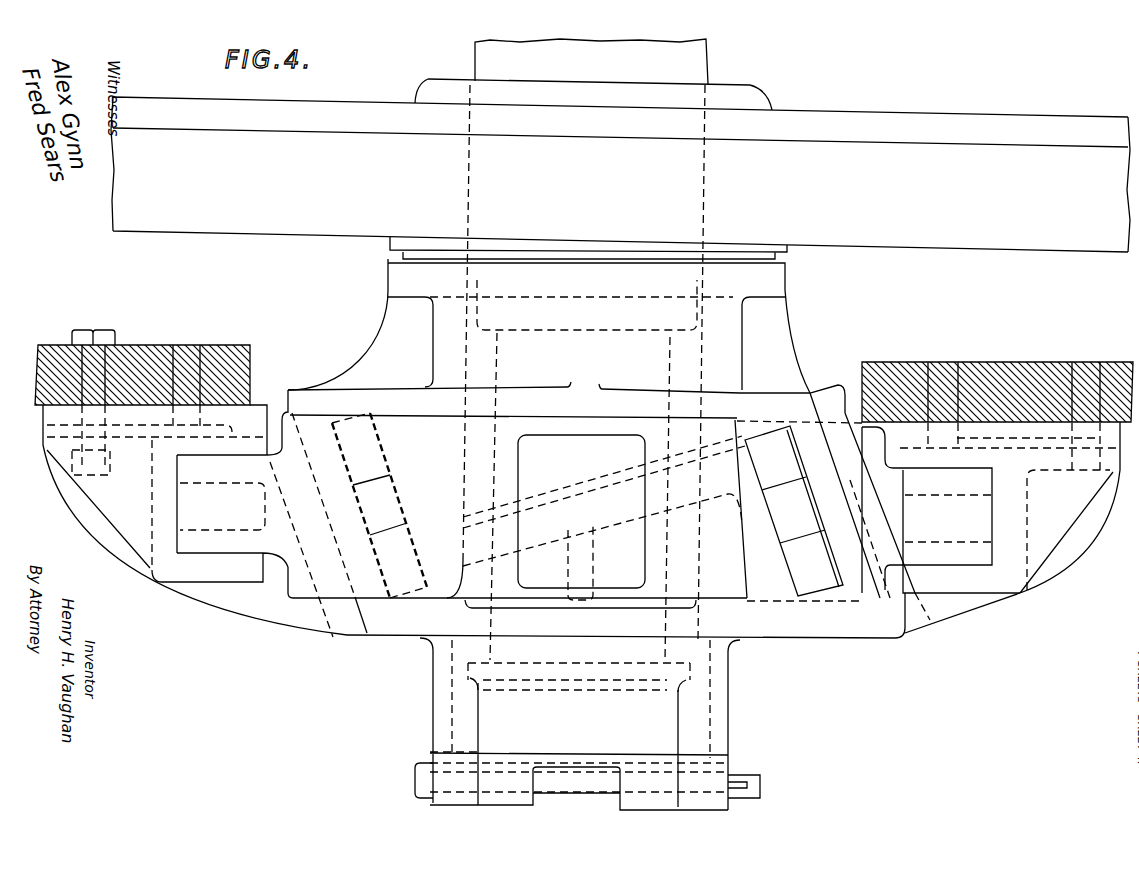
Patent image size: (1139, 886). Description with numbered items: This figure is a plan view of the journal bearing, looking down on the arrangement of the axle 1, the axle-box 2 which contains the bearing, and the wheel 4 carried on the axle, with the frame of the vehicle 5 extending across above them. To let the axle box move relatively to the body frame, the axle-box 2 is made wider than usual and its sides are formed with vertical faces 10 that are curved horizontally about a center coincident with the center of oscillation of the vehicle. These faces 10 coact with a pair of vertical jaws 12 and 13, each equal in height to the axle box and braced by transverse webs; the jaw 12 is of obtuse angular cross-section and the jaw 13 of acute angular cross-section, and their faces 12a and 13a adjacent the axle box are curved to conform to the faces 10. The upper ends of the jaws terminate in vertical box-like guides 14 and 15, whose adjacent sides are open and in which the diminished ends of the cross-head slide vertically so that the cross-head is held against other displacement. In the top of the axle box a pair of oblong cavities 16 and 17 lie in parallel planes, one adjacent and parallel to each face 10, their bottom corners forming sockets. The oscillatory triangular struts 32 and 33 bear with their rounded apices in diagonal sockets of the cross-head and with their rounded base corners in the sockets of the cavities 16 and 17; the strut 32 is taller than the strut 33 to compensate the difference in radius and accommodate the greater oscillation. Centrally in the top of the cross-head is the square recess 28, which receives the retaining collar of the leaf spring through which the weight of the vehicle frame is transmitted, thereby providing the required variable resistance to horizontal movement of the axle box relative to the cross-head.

The axle 1 is at (593, 339).
The axle-box 2 is at (742, 620).
The wheel 4 is at (620, 174).
The frame of the vehicle 5 is at (250, 347).
The vertical face 10 is at (960, 610).
The vertical jaw 12 is at (345, 638).
The face of jaw 12a is at (370, 615).
The vertical jaw 13 is at (913, 620).
The face of jaw 13a is at (890, 603).
The vertical box-like guide 14 is at (202, 578).
The vertical box-like guide 15 is at (1017, 590).
The oblong cavity 16 is at (406, 522).
The oblong cavity 17 is at (831, 551).
The square recess 28 is at (533, 435).
The oscillatory triangular strut 32 is at (393, 495).
The oscillatory triangular strut 33 is at (803, 492).